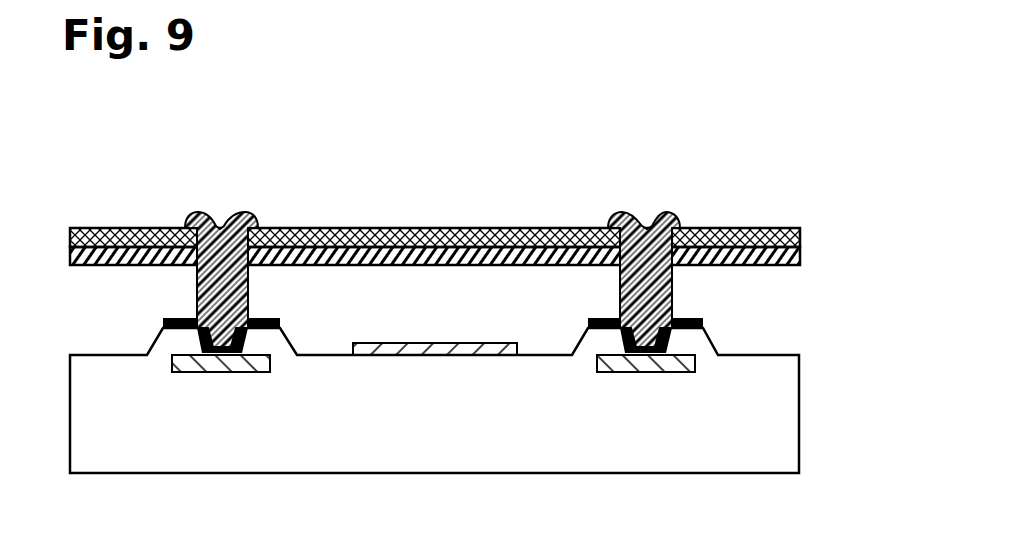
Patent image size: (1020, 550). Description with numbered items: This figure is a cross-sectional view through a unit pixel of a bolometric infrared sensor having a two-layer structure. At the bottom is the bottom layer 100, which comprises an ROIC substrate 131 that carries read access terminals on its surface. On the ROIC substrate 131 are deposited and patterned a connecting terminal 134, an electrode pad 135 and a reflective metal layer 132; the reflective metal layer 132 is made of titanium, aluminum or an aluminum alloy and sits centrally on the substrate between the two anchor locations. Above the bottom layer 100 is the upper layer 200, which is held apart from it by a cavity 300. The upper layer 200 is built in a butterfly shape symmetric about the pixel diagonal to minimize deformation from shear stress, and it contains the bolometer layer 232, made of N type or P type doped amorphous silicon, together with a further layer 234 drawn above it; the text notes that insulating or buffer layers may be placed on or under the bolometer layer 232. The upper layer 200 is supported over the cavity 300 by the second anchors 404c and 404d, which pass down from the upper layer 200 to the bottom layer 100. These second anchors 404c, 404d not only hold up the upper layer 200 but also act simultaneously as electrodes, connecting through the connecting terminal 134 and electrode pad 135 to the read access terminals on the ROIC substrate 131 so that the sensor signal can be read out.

The bottom layer 100 is at (474, 434).
The ROIC substrate 131 is at (420, 448).
The reflective metal layer 132 is at (460, 357).
The connecting terminal 134 is at (608, 362).
The electrode pad 135 is at (696, 350).
The upper layer 200 is at (473, 192).
The bolometer layer 232 is at (400, 227).
The upper layer of top package 234 is at (320, 230).
The cavity 300 is at (519, 229).
The second anchor 404c is at (217, 228).
The second anchor 404d is at (647, 228).